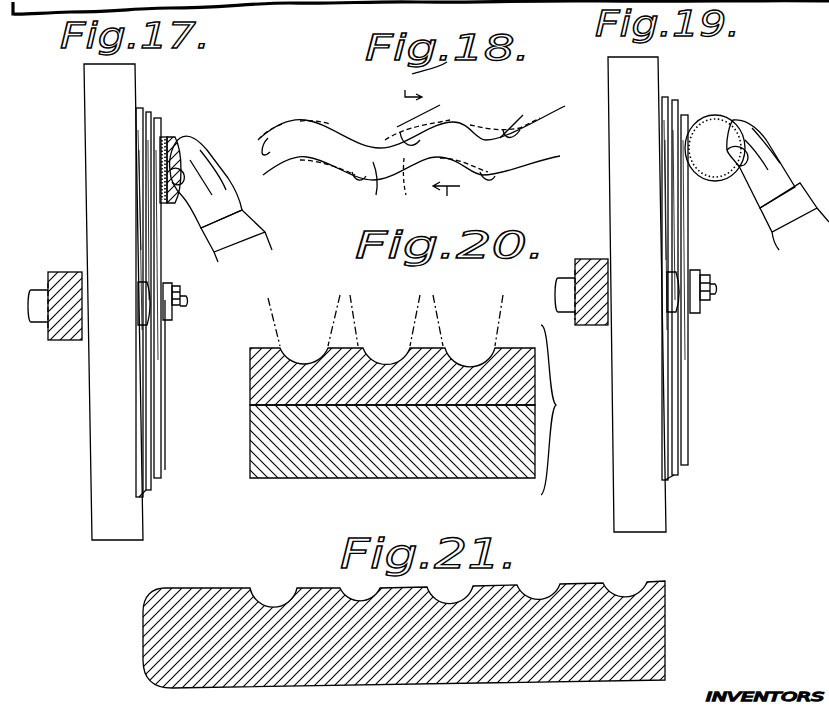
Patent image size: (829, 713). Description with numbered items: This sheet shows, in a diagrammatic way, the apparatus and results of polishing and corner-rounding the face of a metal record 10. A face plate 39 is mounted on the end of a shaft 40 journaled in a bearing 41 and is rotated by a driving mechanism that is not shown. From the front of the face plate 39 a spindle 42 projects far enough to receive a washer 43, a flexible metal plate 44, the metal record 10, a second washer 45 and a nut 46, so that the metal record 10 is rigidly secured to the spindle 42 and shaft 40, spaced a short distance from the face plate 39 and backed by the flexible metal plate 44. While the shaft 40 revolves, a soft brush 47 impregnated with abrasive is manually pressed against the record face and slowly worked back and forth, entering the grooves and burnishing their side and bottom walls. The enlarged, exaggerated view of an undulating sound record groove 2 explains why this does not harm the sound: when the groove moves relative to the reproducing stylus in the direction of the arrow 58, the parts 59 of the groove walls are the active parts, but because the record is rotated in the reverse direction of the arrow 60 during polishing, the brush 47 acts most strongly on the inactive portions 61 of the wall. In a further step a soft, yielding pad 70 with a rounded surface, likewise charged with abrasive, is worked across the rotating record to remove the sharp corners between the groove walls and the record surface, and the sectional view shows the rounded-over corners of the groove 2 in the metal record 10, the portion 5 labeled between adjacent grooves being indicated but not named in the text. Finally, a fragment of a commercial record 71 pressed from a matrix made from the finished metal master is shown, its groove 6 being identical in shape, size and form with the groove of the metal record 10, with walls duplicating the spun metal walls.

In FIG. 18, the sound record groove 2 is at (372, 188).
In FIG. 20, the sound record groove 2 is at (298, 355).
In FIG. 18, the ridge between grooves 5 is at (409, 186).
In FIG. 20, the ridge between grooves 5 is at (383, 356).
In FIG. 21, the groove 6 is at (272, 600).
In FIG. 17, the metal record 10 is at (161, 362).
In FIG. 19, the metal record 10 is at (690, 370).
In FIG. 20, the metal record 10 is at (414, 410).
In FIG. 17, the face plate 39 is at (106, 419).
In FIG. 19, the face plate 39 is at (628, 506).
In FIG. 17, the shaft 40 is at (40, 312).
In FIG. 19, the shaft 40 is at (556, 298).
In FIG. 17, the bearing 41 is at (58, 272).
In FIG. 19, the bearing 41 is at (583, 259).
In FIG. 17, the spindle 42 is at (186, 303).
In FIG. 19, the spindle 42 is at (717, 289).
In FIG. 17, the washer 43 is at (140, 305).
In FIG. 19, the washer 43 is at (670, 300).
In FIG. 17, the flexible metal plate 44 is at (148, 490).
In FIG. 19, the flexible metal plate 44 is at (681, 480).
In FIG. 17, the washer 45 is at (168, 325).
In FIG. 19, the washer 45 is at (701, 308).
In FIG. 17, the nut 46 is at (180, 290).
In FIG. 19, the nut 46 is at (709, 280).
In FIG. 17, the soft brush 47 is at (168, 140).
In FIG. 18, the arrow 58 is at (445, 199).
In FIG. 18, the active parts of groove walls 59 is at (330, 125).
In FIG. 18, the arrow 60 is at (415, 81).
In FIG. 18, the inactive portions of groove wall 61 is at (480, 203).
In FIG. 19, the soft pad 70 is at (714, 130).
In FIG. 21, the commercial record 71 is at (162, 640).